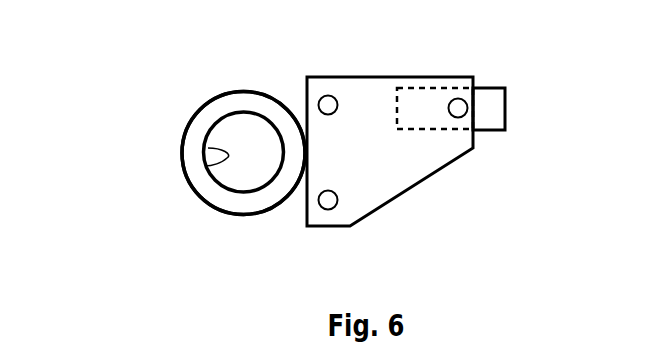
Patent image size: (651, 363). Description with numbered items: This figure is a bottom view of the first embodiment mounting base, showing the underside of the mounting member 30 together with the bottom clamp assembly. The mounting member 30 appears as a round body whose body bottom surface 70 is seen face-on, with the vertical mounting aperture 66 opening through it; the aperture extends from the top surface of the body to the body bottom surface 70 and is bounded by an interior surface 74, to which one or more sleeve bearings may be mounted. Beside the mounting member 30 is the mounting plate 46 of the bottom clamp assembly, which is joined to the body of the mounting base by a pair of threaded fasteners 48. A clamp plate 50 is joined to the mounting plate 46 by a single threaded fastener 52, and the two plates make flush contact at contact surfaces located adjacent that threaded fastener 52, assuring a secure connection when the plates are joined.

The mounting member 30 is at (180, 184).
The mounting plate 46 is at (375, 93).
The threaded fasteners 48 is at (328, 113).
The clamp plate 50 is at (488, 112).
The threaded fastener 52 is at (458, 100).
The vertical mounting aperture 66 is at (243, 133).
The body bottom surface 70 is at (208, 115).
The interior surface 74 is at (205, 166).